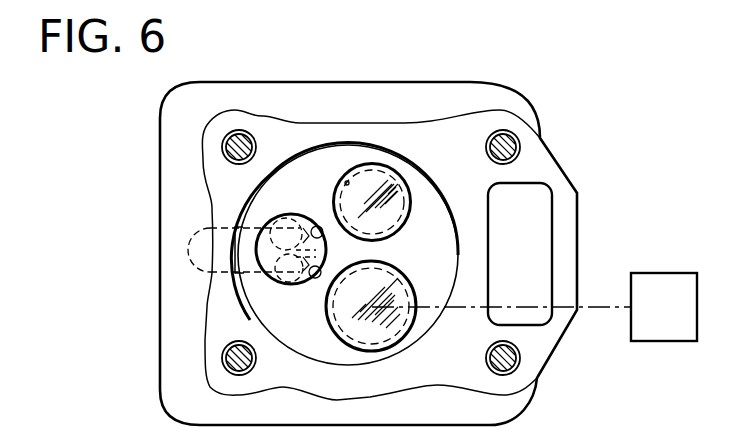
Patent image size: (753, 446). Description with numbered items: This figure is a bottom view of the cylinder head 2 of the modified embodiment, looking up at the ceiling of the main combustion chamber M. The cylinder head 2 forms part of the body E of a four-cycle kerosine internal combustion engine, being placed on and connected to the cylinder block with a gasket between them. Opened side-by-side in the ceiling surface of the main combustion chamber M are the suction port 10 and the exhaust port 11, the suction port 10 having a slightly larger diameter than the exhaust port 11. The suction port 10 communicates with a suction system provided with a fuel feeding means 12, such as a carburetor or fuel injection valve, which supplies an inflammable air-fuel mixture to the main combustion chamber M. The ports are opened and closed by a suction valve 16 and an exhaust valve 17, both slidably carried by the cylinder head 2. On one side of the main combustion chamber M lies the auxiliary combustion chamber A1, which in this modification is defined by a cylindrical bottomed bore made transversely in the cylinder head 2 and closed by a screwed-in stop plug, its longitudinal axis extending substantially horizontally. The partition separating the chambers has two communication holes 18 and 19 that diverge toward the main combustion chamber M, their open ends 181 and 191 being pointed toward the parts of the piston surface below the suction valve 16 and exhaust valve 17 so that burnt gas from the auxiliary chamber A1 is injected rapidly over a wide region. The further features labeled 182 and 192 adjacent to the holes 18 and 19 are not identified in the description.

The cylinder head 2 is at (540, 163).
The body E is at (537, 101).
The suction port 10 is at (338, 326).
The exhaust port 11 is at (346, 181).
The fuel feeding means 12 is at (679, 322).
The suction valve 16 is at (396, 283).
The exhaust valve 17 is at (392, 212).
The communication hole 18 is at (297, 280).
The communication hole 19 is at (287, 248).
The open end of communication hole 181 is at (319, 277).
The lower chamber 182 is at (276, 278).
The open end of communication hole 191 is at (322, 229).
The upper chamber 192 is at (289, 224).
The main combustion chamber M is at (410, 264).
The auxiliary combustion chamber A1 is at (318, 253).